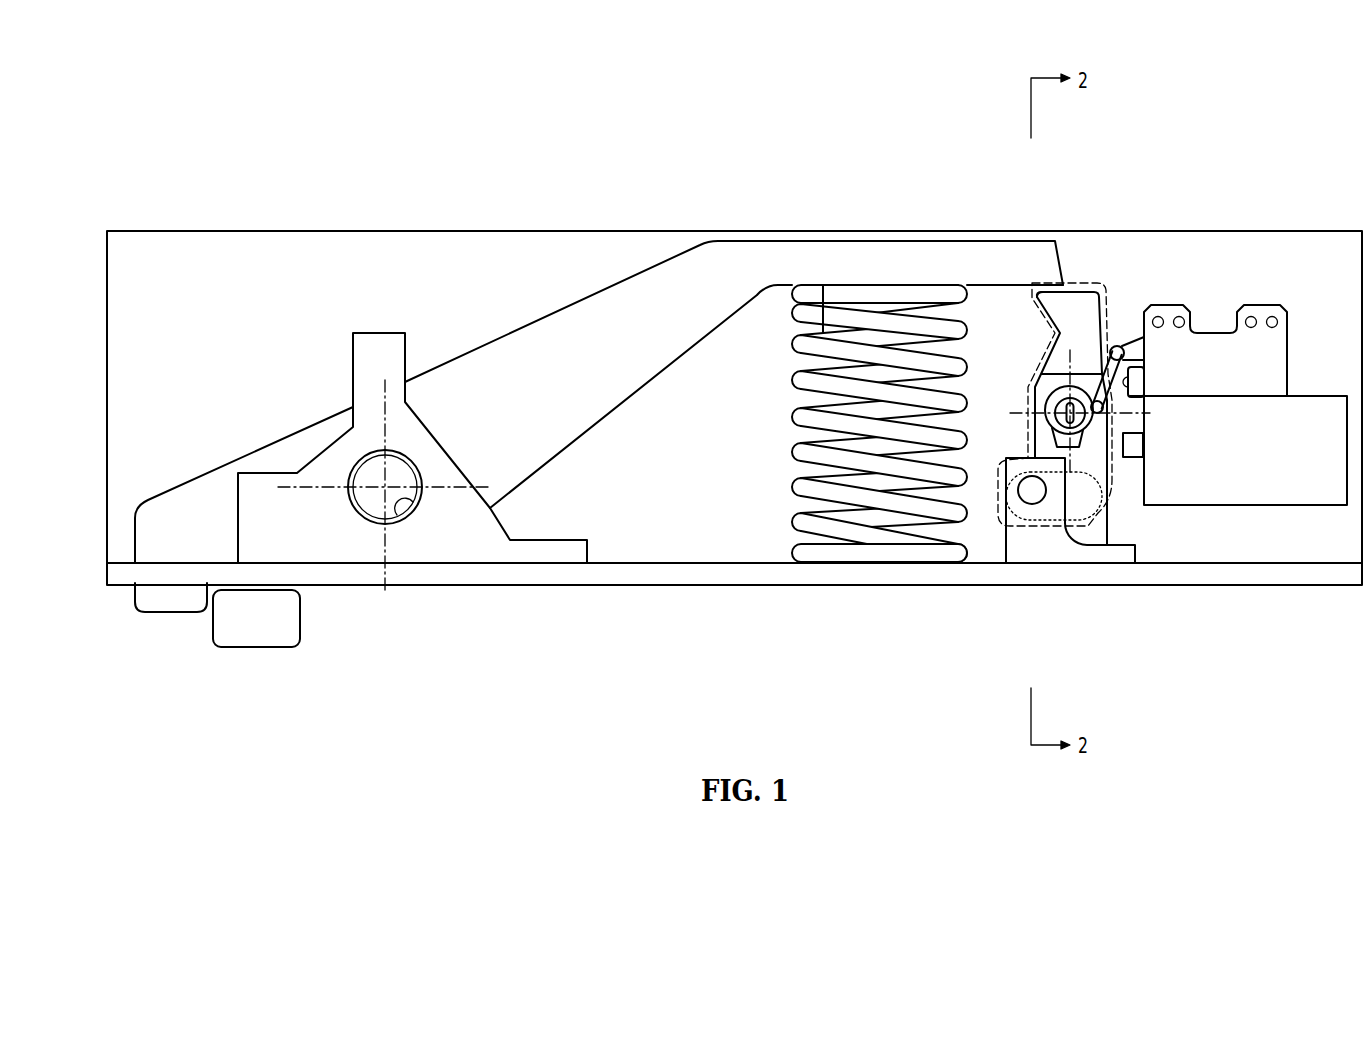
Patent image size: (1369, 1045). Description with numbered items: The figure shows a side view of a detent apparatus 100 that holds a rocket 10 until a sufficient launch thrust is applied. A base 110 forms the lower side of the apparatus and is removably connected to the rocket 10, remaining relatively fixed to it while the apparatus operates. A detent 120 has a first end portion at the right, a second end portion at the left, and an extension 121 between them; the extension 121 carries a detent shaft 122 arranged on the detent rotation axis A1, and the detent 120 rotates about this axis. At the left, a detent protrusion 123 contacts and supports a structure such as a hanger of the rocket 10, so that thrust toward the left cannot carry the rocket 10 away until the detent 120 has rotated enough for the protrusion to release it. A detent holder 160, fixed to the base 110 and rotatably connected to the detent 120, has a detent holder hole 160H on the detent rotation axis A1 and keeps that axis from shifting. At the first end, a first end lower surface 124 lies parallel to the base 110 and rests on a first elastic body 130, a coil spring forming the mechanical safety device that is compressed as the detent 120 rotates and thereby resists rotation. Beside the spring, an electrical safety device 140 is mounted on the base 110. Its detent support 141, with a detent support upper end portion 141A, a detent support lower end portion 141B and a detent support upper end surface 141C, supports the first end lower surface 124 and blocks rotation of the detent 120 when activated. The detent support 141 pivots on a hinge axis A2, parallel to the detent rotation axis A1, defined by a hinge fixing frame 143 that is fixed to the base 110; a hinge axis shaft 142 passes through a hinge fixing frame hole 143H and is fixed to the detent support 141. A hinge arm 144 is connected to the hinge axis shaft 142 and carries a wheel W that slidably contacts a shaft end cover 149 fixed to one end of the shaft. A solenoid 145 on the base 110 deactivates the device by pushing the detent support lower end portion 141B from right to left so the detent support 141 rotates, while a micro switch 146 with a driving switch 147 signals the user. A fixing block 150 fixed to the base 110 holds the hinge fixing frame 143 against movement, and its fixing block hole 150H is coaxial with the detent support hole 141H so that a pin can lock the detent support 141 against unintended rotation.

The rocket 10 is at (257, 642).
The detent apparatus 100 is at (1319, 166).
The base 110 is at (705, 575).
The detent 120 is at (800, 240).
The extension 121 is at (603, 398).
The detent shaft 122 is at (362, 522).
The detent protrusion 123 is at (172, 602).
The first end lower surface 124 is at (992, 286).
The first elastic body 130 is at (876, 525).
The electrical safety device 140 is at (1262, 290).
The detent support 141 is at (1102, 300).
The detent support upper end portion 141A is at (1083, 283).
The detent support lower end portion 141B is at (1085, 518).
The detent support upper end surface 141C is at (1043, 292).
The detent support hole 141H is at (1030, 502).
The hinge axis shaft 142 is at (1052, 398).
The hinge fixing frame 143 is at (1108, 528).
The hinge fixing frame hole 143H is at (1127, 440).
The hinge arm 144 is at (1092, 376).
The solenoid 145 is at (1245, 508).
The micro switch 146 is at (1288, 352).
The driving switch 147 is at (1133, 379).
The shaft end cover 149 is at (1050, 432).
The fixing block 150 is at (1015, 538).
The fixing block hole 150H is at (1034, 492).
The detent holder 160 is at (383, 333).
The detent holder hole 160H is at (400, 523).
The wheel W is at (1088, 404).
The detent rotation axis A1 is at (383, 474).
The hinge axis A2 is at (1065, 412).